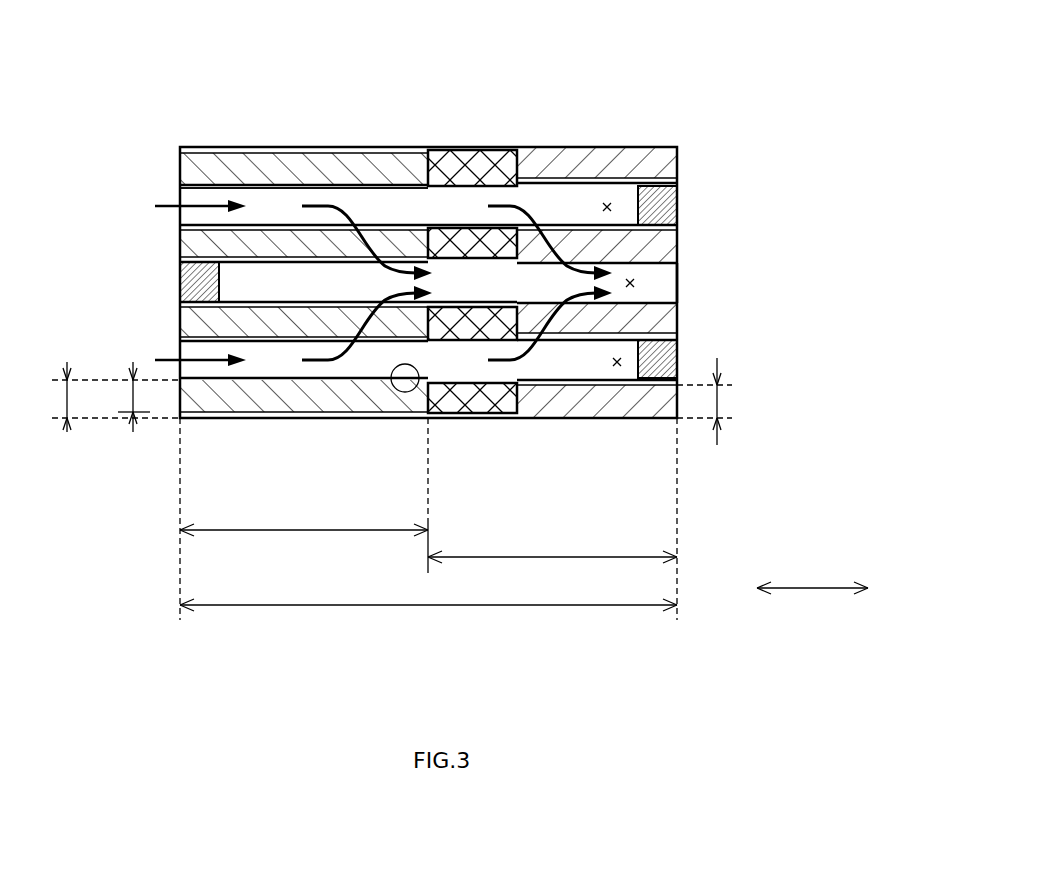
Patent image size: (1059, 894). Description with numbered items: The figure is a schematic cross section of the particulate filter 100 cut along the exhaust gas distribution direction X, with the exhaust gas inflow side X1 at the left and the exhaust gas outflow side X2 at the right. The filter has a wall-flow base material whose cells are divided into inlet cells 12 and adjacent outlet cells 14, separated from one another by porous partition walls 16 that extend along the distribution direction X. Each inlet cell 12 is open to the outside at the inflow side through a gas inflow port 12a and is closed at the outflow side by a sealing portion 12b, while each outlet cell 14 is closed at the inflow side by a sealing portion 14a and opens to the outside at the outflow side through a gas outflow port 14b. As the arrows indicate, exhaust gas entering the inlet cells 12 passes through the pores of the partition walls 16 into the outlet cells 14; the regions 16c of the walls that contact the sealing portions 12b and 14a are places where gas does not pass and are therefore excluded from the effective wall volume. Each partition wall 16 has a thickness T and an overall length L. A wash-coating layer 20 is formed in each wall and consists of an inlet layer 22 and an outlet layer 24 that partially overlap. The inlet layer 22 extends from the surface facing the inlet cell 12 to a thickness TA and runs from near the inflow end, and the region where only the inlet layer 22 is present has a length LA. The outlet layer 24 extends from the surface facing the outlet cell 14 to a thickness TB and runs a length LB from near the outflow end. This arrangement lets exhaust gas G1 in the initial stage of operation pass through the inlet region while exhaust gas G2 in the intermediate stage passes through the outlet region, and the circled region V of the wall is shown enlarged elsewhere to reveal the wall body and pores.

The particulate filter 100 is at (672, 132).
The partition wall 16 is at (205, 150).
The region in contact with sealing portion 16c is at (670, 160).
The inlet layer 22 is at (272, 232).
The outlet layer 24 is at (490, 160).
The wash-coating layer 20 is at (470, 60).
The inlet cell 12 is at (607, 205).
The gas inflow port 12a is at (178, 225).
The sealing portion 12b is at (672, 202).
The outlet cell 14 is at (632, 283).
The sealing portion 14a is at (185, 282).
The gas outflow port 14b is at (678, 287).
The exhaust gas in the initial stage of operation G1 is at (343, 210).
The exhaust gas in the intermediate stage of operation G2 is at (540, 193).
The region V is at (405, 393).
The thickness of the partition wall T is at (66, 400).
The thickness of the inlet layer TA is at (133, 398).
The thickness of the outlet layer TB is at (720, 402).
The overall length of the partition wall L is at (428, 532).
The length of the inlet region LA is at (304, 495).
The length of the outlet region LB is at (552, 575).
The exhaust gas distribution direction X is at (812, 571).
The exhaust gas inflow side X1 is at (747, 589).
The exhaust gas outflow side X2 is at (880, 589).